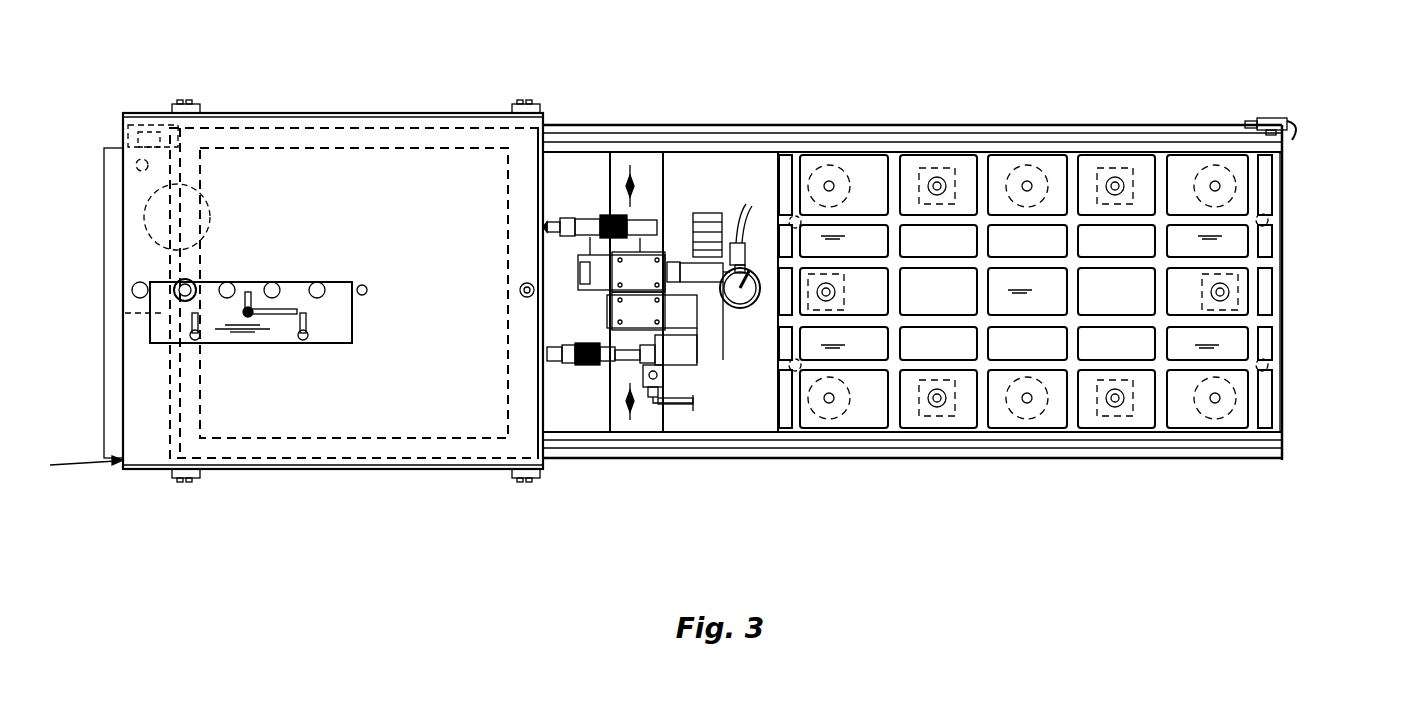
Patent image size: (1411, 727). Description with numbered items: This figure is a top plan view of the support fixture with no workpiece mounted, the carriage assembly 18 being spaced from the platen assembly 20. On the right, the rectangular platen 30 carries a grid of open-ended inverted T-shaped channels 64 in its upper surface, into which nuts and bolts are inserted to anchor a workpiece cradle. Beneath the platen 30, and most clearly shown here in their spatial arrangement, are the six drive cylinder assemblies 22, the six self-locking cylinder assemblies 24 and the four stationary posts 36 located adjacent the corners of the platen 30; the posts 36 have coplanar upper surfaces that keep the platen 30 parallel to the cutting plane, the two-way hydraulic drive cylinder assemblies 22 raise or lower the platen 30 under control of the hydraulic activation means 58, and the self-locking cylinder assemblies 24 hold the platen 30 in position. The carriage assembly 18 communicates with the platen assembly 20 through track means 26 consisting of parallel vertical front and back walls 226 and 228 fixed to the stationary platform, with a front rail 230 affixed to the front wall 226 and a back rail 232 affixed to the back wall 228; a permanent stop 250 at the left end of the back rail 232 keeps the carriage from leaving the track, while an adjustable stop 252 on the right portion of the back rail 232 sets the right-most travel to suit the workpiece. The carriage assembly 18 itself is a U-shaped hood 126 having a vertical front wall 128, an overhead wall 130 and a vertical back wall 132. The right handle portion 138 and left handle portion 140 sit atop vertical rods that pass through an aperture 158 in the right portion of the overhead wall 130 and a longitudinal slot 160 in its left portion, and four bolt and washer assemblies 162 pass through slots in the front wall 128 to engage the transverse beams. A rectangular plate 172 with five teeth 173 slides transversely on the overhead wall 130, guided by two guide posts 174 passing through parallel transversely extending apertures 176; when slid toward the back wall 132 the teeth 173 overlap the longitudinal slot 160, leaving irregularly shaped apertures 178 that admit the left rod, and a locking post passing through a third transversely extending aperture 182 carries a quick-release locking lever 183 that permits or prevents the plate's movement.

The carriage assembly 18 is at (70, 467).
The platen assembly 20 is at (1292, 406).
The drive cylinder assemblies 22 is at (962, 390).
The self-locking cylinder assemblies 24 is at (847, 160).
The track means 26 is at (1255, 470).
The platen 30 is at (1265, 185).
The stationary posts 36 is at (1265, 205).
The hydraulic activation means 58 is at (690, 228).
The inverted T-shaped channels 64 is at (828, 315).
The U-shaped hood 126 is at (145, 455).
The vertical front wall 128 is at (160, 455).
The overhead wall 130 is at (147, 418).
The vertical back wall 132 is at (150, 112).
The right handle portion 138 is at (527, 300).
The left handle portion 140 is at (178, 288).
The aperture 158 is at (517, 288).
The longitudinal slot 160 is at (353, 300).
The bolt and washer assemblies 162 is at (190, 103).
The rectangular plate 172 is at (165, 325).
The teeth 173 is at (231, 284).
The guide posts 174 is at (192, 336).
The transversely extending apertures 176 is at (308, 316).
The irregularly shaped apertures 178 is at (346, 288).
The third transversely extending aperture 182 is at (252, 296).
The quick-release locking lever 183 is at (270, 290).
The front wall 226 is at (697, 445).
The back wall 228 is at (697, 150).
The front rail 230 is at (848, 458).
The back rail 232 is at (803, 133).
The permanent stop 250 is at (122, 130).
The adjustable stop 252 is at (1272, 118).